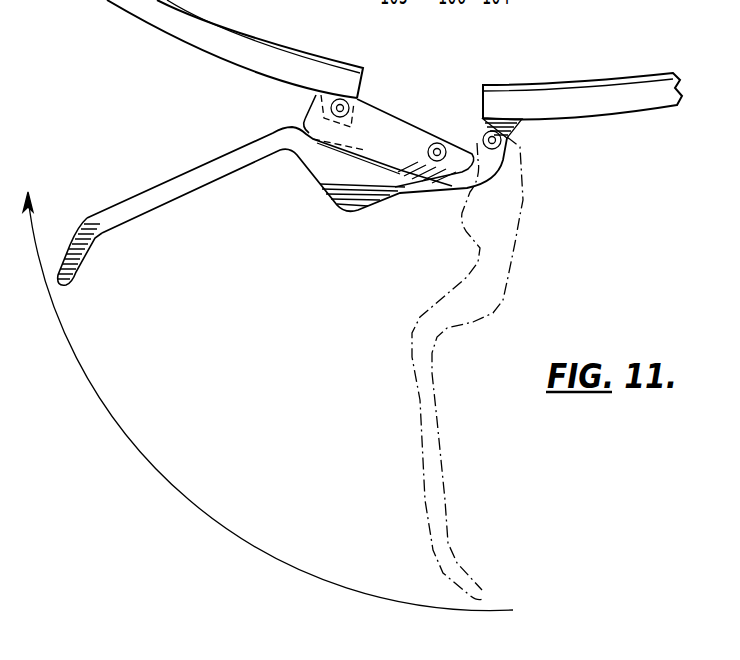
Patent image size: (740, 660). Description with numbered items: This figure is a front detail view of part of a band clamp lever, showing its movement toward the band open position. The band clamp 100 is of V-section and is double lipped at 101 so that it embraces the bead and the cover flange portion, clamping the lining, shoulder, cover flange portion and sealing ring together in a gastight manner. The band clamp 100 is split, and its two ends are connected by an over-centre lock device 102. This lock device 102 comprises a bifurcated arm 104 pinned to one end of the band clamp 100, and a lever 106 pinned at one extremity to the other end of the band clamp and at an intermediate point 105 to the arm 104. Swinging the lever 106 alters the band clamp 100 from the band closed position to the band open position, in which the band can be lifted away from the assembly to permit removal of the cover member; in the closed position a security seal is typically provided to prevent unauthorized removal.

The band clamp 100 is at (199, 54).
The double lip 101 is at (262, 43).
The over-centre lock device 102 is at (295, 108).
The bifurcated arm 104 is at (390, 130).
The intermediate point 105 is at (439, 142).
The lever 106 is at (202, 175).